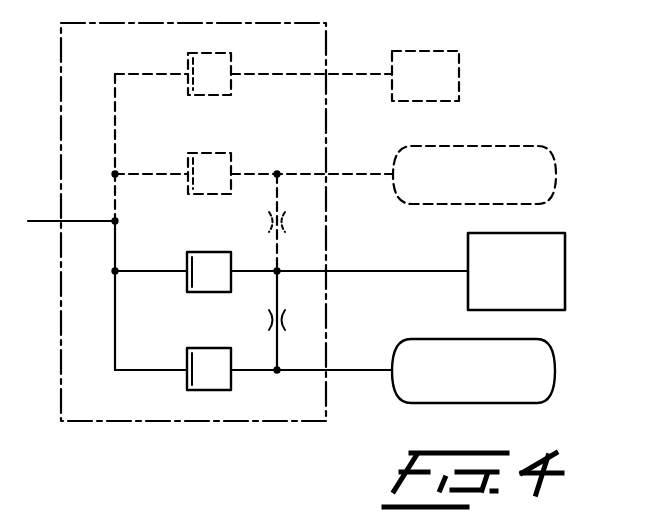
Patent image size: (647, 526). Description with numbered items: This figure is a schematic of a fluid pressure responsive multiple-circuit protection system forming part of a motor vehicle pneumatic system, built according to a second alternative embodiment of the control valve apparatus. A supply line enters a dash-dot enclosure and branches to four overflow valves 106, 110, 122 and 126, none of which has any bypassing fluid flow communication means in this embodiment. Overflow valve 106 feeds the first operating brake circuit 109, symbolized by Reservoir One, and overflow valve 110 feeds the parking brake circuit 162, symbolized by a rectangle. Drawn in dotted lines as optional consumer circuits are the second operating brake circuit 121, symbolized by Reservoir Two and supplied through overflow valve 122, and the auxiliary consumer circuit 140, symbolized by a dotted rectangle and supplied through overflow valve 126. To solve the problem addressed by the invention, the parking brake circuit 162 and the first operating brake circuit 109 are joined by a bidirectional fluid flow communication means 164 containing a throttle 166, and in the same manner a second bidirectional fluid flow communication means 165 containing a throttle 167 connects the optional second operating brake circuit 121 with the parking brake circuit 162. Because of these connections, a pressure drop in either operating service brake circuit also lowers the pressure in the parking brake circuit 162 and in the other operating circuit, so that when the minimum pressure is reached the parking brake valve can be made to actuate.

The overflow valve 106 is at (217, 358).
The first operating brake circuit 109 is at (545, 384).
The overflow valve 110 is at (216, 262).
The second operating brake circuit 121 is at (546, 188).
The overflow valve 122 is at (218, 162).
The overflow valve 126 is at (218, 62).
The auxiliary consumer circuit 140 is at (425, 62).
The parking brake circuit 162 is at (553, 288).
The bidirectional fluid flow communication means 164 is at (277, 290).
The second bidirectional fluid flow communication means 165 is at (277, 253).
The throttle 166 is at (268, 320).
The throttle 167 is at (268, 222).